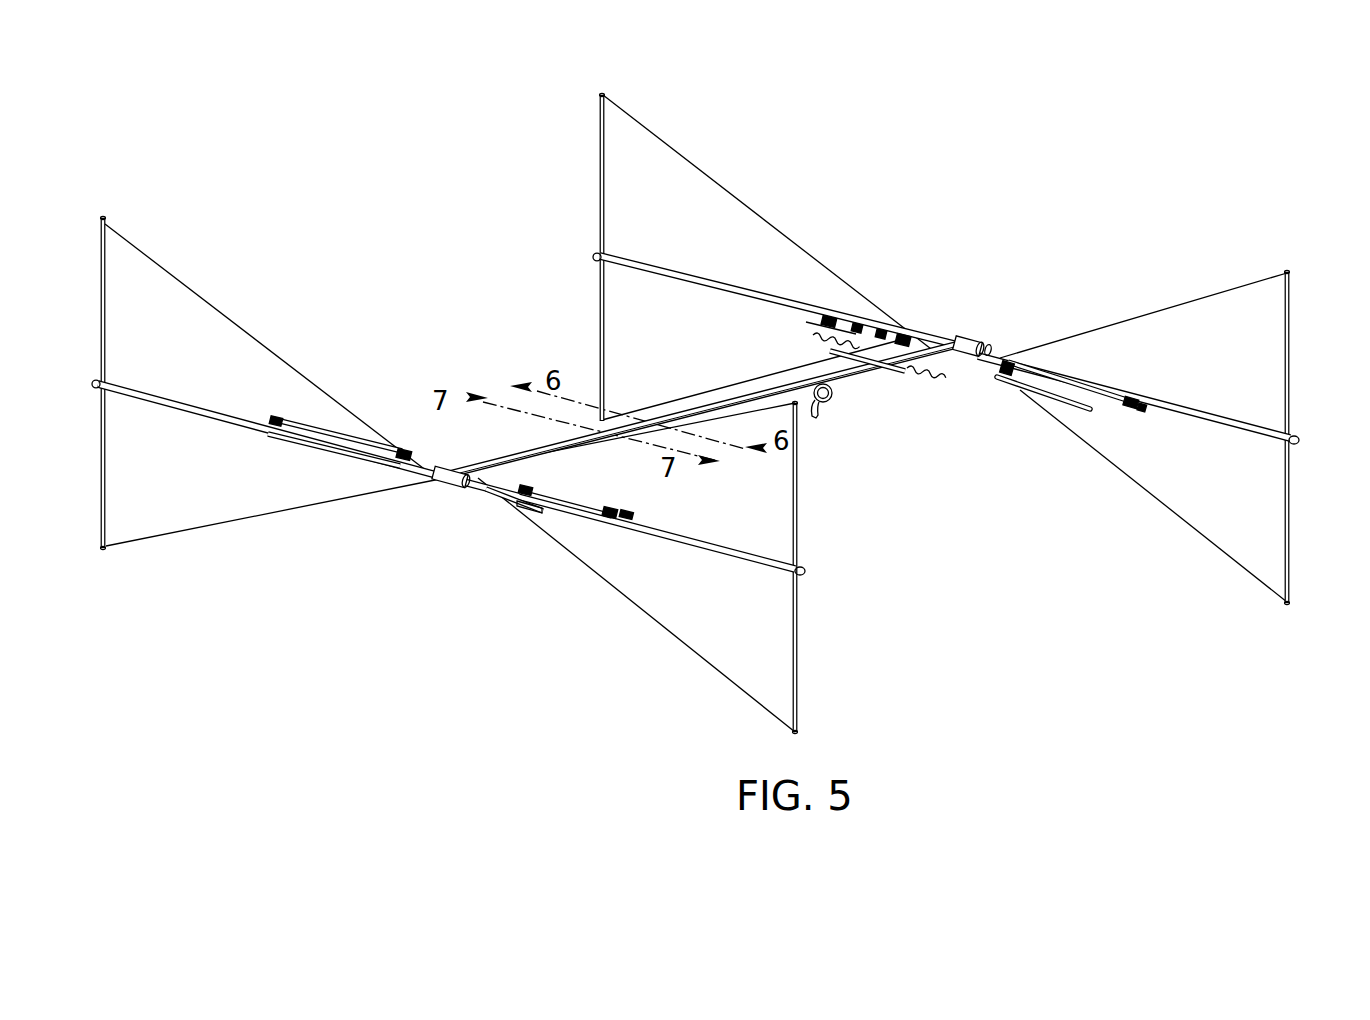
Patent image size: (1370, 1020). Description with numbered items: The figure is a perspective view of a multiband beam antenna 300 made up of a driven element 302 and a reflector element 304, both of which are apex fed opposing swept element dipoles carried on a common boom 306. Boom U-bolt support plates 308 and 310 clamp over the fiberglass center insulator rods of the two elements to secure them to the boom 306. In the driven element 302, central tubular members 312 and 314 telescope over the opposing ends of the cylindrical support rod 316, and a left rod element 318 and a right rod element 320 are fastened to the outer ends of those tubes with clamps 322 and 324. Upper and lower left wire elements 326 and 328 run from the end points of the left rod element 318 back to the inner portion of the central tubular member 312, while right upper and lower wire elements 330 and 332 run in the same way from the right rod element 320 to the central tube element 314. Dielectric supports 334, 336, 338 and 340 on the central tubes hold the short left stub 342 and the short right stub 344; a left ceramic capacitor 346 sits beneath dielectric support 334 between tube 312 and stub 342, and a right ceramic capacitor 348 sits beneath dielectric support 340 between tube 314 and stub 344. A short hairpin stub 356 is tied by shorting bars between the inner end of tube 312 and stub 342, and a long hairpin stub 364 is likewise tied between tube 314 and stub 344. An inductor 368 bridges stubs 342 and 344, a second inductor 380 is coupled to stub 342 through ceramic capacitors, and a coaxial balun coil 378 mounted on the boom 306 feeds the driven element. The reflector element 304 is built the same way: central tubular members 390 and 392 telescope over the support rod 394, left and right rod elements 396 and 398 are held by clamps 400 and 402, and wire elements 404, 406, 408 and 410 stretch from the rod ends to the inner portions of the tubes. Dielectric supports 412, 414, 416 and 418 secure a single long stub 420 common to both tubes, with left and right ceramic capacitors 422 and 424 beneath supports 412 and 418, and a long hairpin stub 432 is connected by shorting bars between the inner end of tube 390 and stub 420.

The beam antenna 300 is at (1058, 157).
The driven element 302 is at (1060, 553).
The reflector element 304 is at (535, 626).
The boom 306 is at (562, 448).
The boom U-bolt support plate 308 is at (985, 346).
The boom U-bolt support plate 310 is at (448, 486).
The central tubular member 312 is at (614, 262).
The central tubular member 314 is at (1208, 410).
The cylindrical support rod 316 is at (967, 338).
The left rod element 318 is at (598, 130).
The right rod element 320 is at (1291, 532).
The clamp 322 is at (594, 259).
The clamp 324 is at (1282, 442).
The upper left wire element 326 is at (652, 133).
The lower left wire element 328 is at (704, 395).
The right upper wire element 330 is at (1215, 294).
The right lower wire element 332 is at (1197, 532).
The dielectric support 334 is at (828, 318).
The dielectric support 336 is at (905, 337).
The dielectric support 338 is at (1012, 362).
The dielectric support 340 is at (1130, 398).
The short left stub 342 is at (882, 330).
The short right stub 344 is at (1062, 381).
The left ceramic capacitor 346 is at (857, 323).
The right ceramic capacitor 348 is at (1143, 410).
The short hairpin stub 356 is at (830, 355).
The long hairpin stub 364 is at (1060, 409).
The inductor 368 is at (942, 376).
The coaxial balun coil 378 is at (833, 398).
The inductor 380 is at (812, 340).
The central tubular member 390 is at (176, 396).
The central tubular member 392 is at (657, 543).
The cylindrical support rod 394 is at (474, 494).
The left rod element 396 is at (107, 318).
The right rod element 398 is at (799, 630).
The clamp 400 is at (93, 388).
The clamp 402 is at (793, 565).
The upper left wire element 404 is at (204, 298).
The lower left wire element 406 is at (220, 518).
The right upper wire element 408 is at (641, 447).
The right lower wire element 410 is at (651, 620).
The dielectric support 412 is at (275, 417).
The dielectric support 414 is at (403, 450).
The dielectric support 416 is at (520, 487).
The dielectric support 418 is at (627, 508).
The long stub 420 is at (543, 496).
The left ceramic capacitor 422 is at (290, 425).
The right ceramic capacitor 424 is at (632, 512).
The long hairpin stub 432 is at (343, 463).